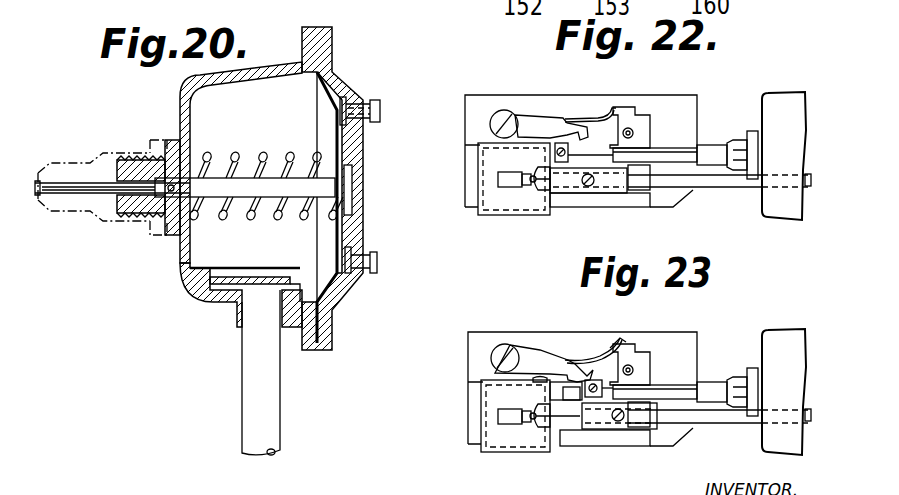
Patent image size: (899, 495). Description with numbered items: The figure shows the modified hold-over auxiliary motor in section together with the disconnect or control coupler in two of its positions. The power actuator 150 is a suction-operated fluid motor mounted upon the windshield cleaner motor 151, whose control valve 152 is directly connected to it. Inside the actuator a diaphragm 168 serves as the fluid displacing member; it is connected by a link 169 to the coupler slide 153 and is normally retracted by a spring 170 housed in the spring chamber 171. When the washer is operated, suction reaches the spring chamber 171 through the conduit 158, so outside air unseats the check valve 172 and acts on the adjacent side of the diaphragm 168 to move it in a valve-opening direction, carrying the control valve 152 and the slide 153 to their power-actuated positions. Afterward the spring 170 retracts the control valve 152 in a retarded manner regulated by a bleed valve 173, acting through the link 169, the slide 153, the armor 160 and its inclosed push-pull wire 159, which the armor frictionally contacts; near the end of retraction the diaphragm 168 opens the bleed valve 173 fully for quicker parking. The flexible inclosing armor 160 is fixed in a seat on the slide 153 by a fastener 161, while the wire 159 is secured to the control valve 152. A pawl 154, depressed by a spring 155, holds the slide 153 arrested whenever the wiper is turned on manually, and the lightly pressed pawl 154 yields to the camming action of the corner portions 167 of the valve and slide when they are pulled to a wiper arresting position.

In FIG. 20, the power actuator 150 is at (181, 116).
In FIG. 22, the power actuator 150 is at (784, 156).
In FIG. 23, the power actuator 150 is at (784, 330).
In FIG. 22, the windshield cleaner motor 151 is at (581, 151).
In FIG. 23, the windshield cleaner motor 151 is at (692, 340).
In FIG. 22, the control valve 152 is at (523, 200).
In FIG. 23, the control valve 152 is at (523, 437).
In FIG. 22, the coupler slide 153 is at (597, 191).
In FIG. 23, the coupler slide 153 is at (610, 429).
In FIG. 22, the pawl 154 is at (524, 117).
In FIG. 23, the pawl 154 is at (525, 356).
In FIG. 22, the spring 155 is at (603, 116).
In FIG. 23, the spring 155 is at (604, 355).
In FIG. 20, the conduit 158 is at (256, 391).
In FIG. 23, the push-pull wire 159 is at (550, 418).
In FIG. 22, the flexible inclosing armor 160 is at (727, 182).
In FIG. 23, the flexible inclosing armor 160 is at (723, 424).
In FIG. 22, the fastener 161 is at (626, 81).
In FIG. 23, the fastener 161 is at (641, 371).
In FIG. 23, the corner portions 167 is at (531, 379).
In FIG. 20, the diaphragm 168 is at (330, 96).
In FIG. 20, the link 169 is at (73, 188).
In FIG. 20, the spring 170 is at (235, 156).
In FIG. 20, the spring chamber 171 is at (270, 261).
In FIG. 20, the check valve 172 is at (368, 258).
In FIG. 20, the bleed valve 173 is at (382, 112).